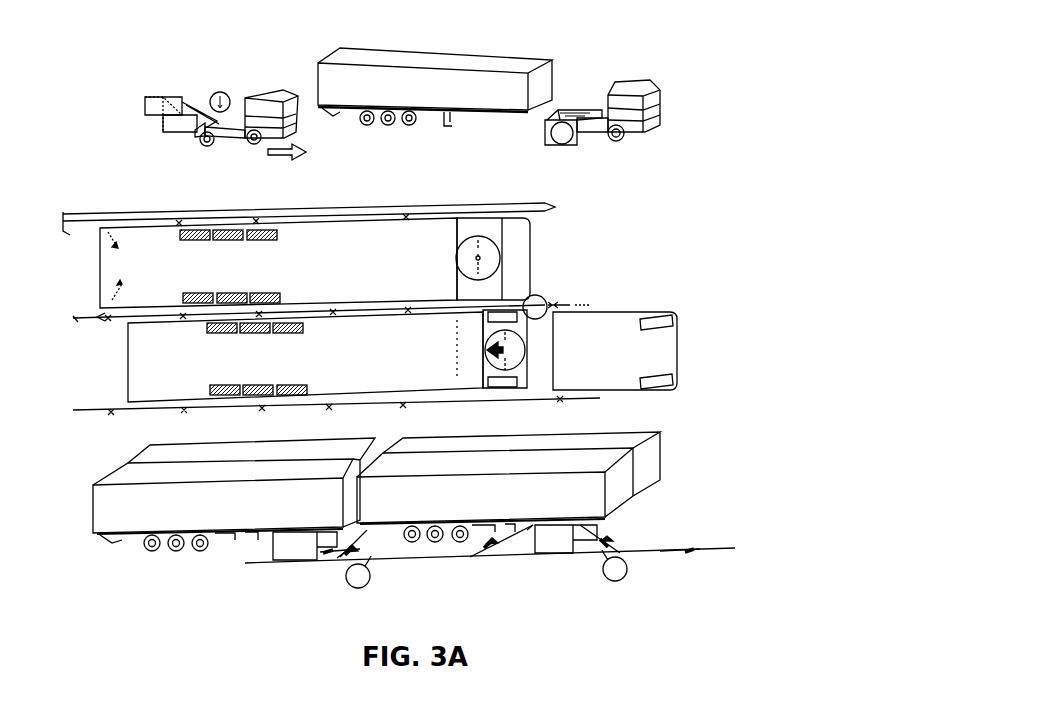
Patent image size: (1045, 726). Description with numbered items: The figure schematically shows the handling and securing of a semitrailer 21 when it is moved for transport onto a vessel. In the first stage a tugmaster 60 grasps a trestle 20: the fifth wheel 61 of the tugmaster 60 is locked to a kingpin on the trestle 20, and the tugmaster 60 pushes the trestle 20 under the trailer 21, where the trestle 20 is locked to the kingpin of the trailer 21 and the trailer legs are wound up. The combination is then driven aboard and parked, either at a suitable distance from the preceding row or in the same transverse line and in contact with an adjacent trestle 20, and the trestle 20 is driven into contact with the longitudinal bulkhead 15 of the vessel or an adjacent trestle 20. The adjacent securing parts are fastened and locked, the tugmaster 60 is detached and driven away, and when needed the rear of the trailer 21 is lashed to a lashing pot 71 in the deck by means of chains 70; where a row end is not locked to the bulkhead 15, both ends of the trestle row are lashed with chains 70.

The bulkhead 15 is at (460, 202).
The trestle 20 is at (172, 132).
The semitrailer 21 is at (428, 62).
The tugmaster 60 is at (268, 92).
The fifth wheel 61 is at (235, 117).
The chains 70 is at (376, 558).
The lashing pot 71 is at (337, 558).